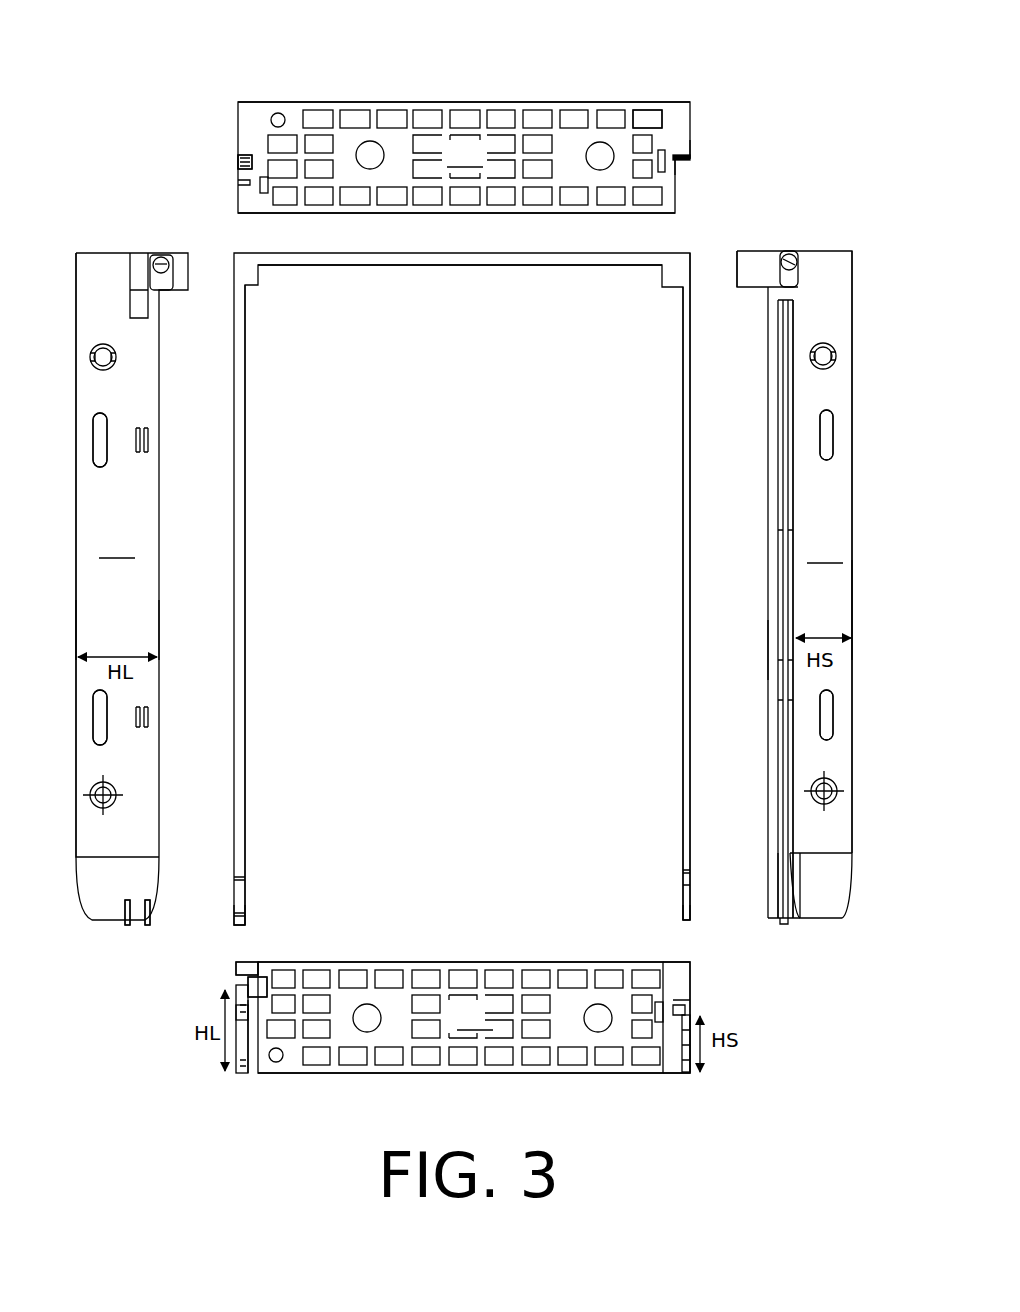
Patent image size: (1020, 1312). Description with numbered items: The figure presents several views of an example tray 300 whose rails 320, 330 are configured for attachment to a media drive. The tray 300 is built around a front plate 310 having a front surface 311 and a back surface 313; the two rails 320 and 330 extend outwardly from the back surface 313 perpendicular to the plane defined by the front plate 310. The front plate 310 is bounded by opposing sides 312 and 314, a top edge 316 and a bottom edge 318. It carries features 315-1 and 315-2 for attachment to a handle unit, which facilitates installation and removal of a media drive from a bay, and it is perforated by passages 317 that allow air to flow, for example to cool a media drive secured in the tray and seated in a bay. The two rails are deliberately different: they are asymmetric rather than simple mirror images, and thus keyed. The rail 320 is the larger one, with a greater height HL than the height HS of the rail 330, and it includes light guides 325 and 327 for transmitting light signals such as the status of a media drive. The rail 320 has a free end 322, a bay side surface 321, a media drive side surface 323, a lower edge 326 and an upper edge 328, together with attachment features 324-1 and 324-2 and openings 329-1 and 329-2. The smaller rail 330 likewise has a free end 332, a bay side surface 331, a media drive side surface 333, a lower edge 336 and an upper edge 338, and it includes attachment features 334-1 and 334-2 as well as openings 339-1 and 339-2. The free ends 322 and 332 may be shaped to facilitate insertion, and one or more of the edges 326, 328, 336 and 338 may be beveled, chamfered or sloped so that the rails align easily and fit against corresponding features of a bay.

The tray 300 is at (172, 36).
The front plate 310 is at (240, 102).
The front surface 311 is at (490, 253).
The side 312 is at (238, 136).
The back surface 313 is at (505, 266).
The side 314 is at (693, 150).
The feature 315-1 is at (370, 142).
The feature 315-2 is at (600, 142).
The top edge 316 is at (340, 102).
The passages 317 is at (655, 106).
The bottom edge 318 is at (345, 213).
The rail 320 is at (120, 253).
The bay side surface 321 is at (233, 372).
The free end 322 is at (250, 922).
The media drive side surface 323 is at (245, 380).
The attachment feature 324-1 is at (105, 360).
The attachment feature 324-2 is at (105, 797).
The light guide 325 is at (127, 920).
The lower edge 326 is at (78, 632).
The light guide 327 is at (148, 925).
The upper edge 328 is at (160, 632).
The opening 329-1 is at (100, 450).
The opening 329-2 is at (103, 725).
The rail 330 is at (808, 251).
The bay side surface 331 is at (690, 376).
The free end 332 is at (683, 917).
The media drive side surface 333 is at (683, 376).
The attachment feature 334-1 is at (821, 358).
The attachment feature 334-2 is at (822, 797).
The lower edge 336 is at (852, 612).
The upper edge 338 is at (793, 553).
The opening 339-1 is at (824, 440).
The opening 339-2 is at (824, 720).